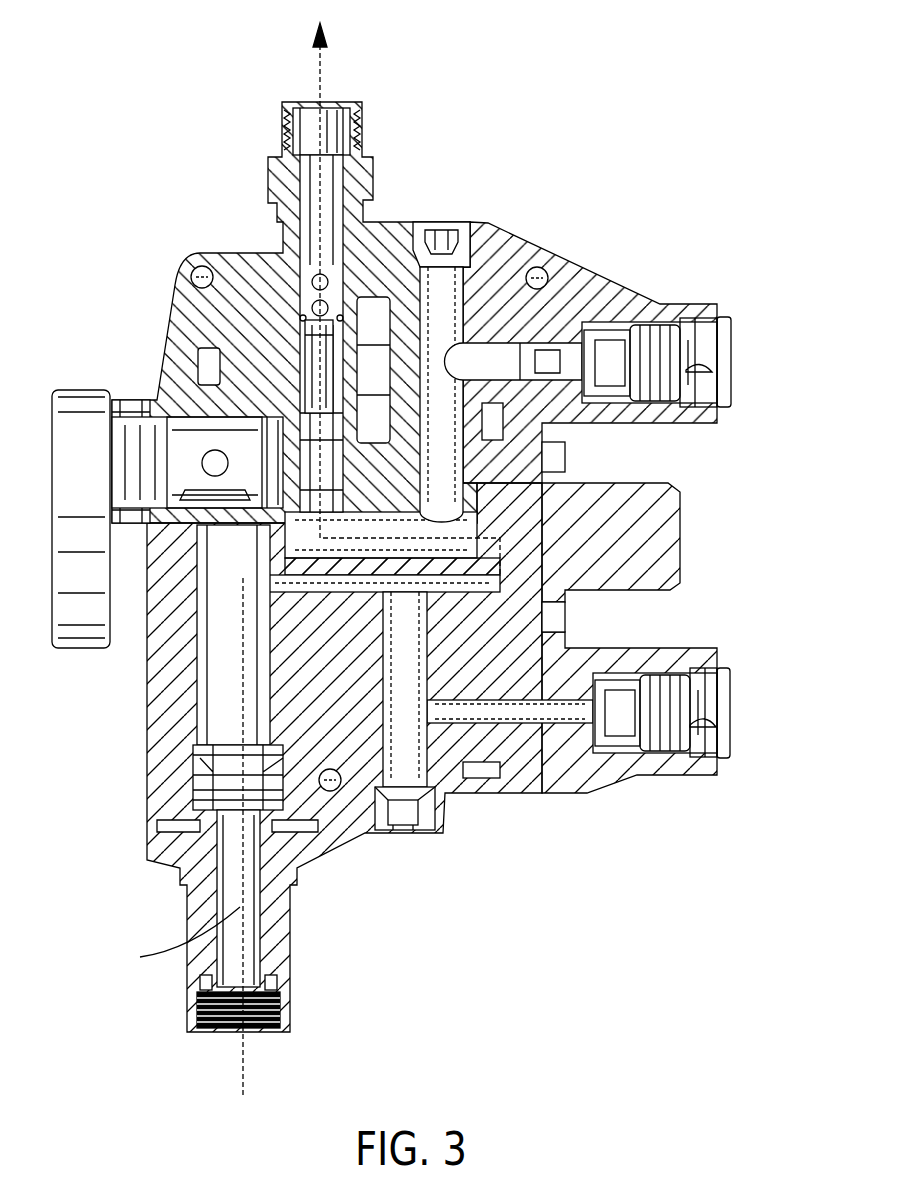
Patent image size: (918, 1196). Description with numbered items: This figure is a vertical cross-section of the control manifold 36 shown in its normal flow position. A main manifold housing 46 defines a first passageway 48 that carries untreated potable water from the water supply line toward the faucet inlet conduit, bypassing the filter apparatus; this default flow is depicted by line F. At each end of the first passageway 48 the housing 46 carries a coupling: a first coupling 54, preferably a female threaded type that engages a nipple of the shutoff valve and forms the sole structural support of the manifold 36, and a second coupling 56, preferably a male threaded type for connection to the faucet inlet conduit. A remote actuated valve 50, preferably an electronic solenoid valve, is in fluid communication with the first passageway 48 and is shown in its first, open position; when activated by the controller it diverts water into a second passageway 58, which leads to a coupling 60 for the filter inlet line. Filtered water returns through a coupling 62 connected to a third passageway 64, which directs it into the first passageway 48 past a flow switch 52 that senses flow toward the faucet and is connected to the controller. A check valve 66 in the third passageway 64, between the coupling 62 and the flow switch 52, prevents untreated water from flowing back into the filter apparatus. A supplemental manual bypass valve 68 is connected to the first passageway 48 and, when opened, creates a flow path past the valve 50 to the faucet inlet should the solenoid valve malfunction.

The control manifold 36 is at (520, 102).
The main manifold housing 46 is at (245, 290).
The first passageway 48 is at (305, 292).
The remote actuated valve 50 is at (612, 552).
The flow switch 52 is at (330, 355).
The first coupling 54 is at (190, 1010).
The second coupling 56 is at (283, 132).
The second passageway 58 is at (498, 706).
The coupling 60 is at (726, 758).
The coupling 62 is at (702, 328).
The third passageway 64 is at (433, 500).
The check valve 66 is at (542, 378).
The supplemental manual bypass valve 68 is at (175, 457).